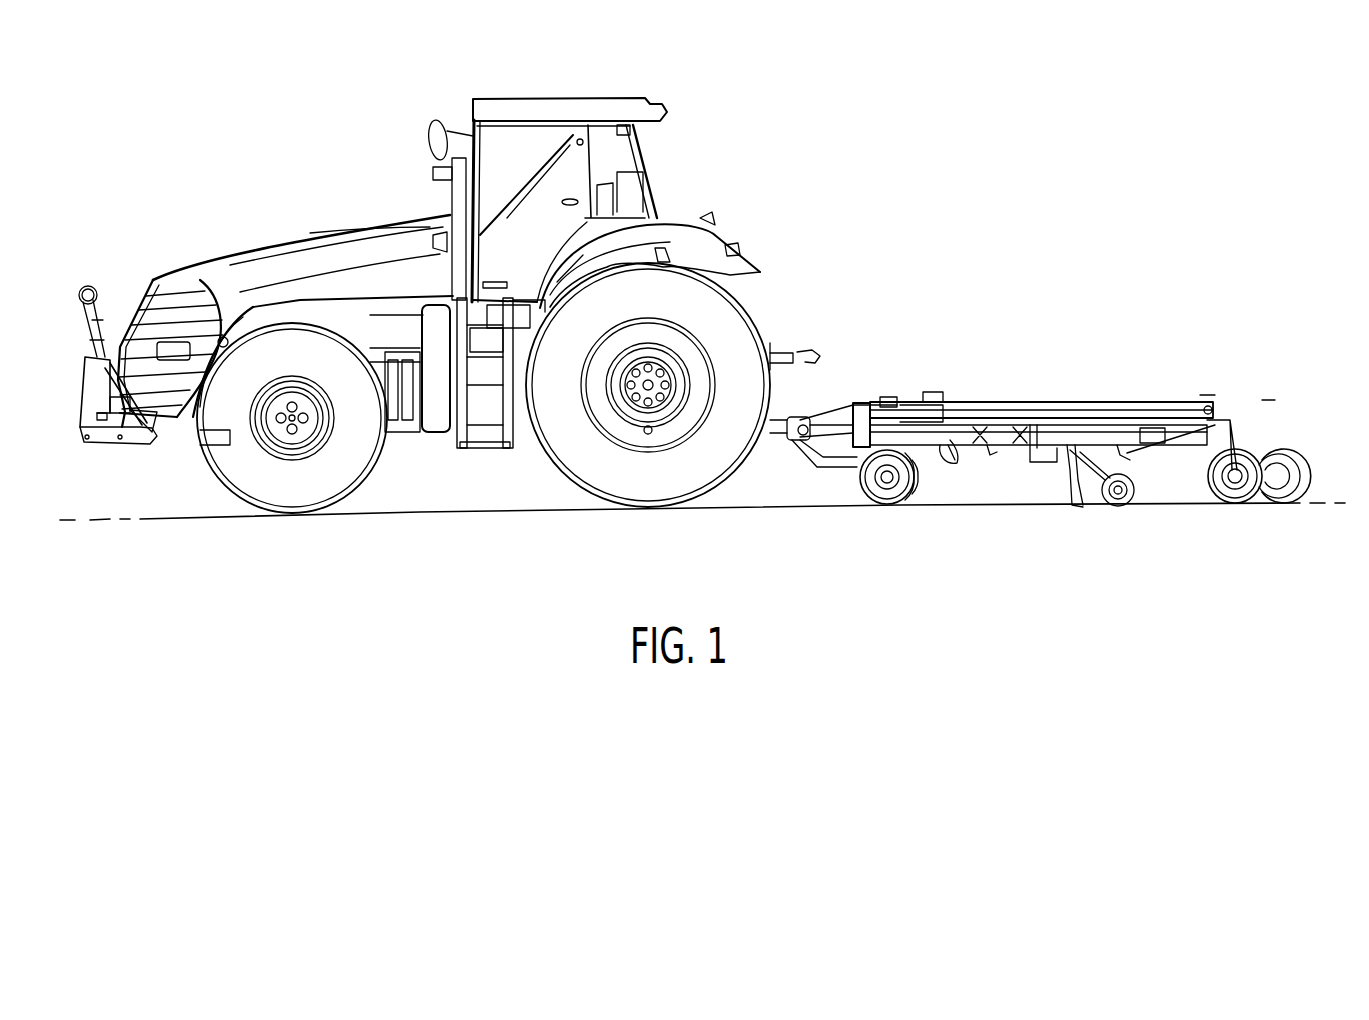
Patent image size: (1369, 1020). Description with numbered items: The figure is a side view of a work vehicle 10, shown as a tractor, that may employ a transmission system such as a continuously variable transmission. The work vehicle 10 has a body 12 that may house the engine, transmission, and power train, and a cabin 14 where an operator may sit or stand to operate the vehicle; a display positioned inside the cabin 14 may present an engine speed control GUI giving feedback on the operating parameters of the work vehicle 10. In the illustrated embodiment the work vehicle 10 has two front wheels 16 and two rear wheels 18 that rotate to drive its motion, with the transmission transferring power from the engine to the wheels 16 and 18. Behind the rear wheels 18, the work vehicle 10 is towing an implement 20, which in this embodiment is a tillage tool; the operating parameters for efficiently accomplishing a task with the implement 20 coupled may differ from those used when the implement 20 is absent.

The work vehicle 10 is at (718, 170).
The body 12 is at (233, 269).
The cabin 14 is at (527, 138).
The front wheels 16 is at (298, 487).
The rear wheels 18 is at (657, 480).
The implement 20 is at (1025, 366).